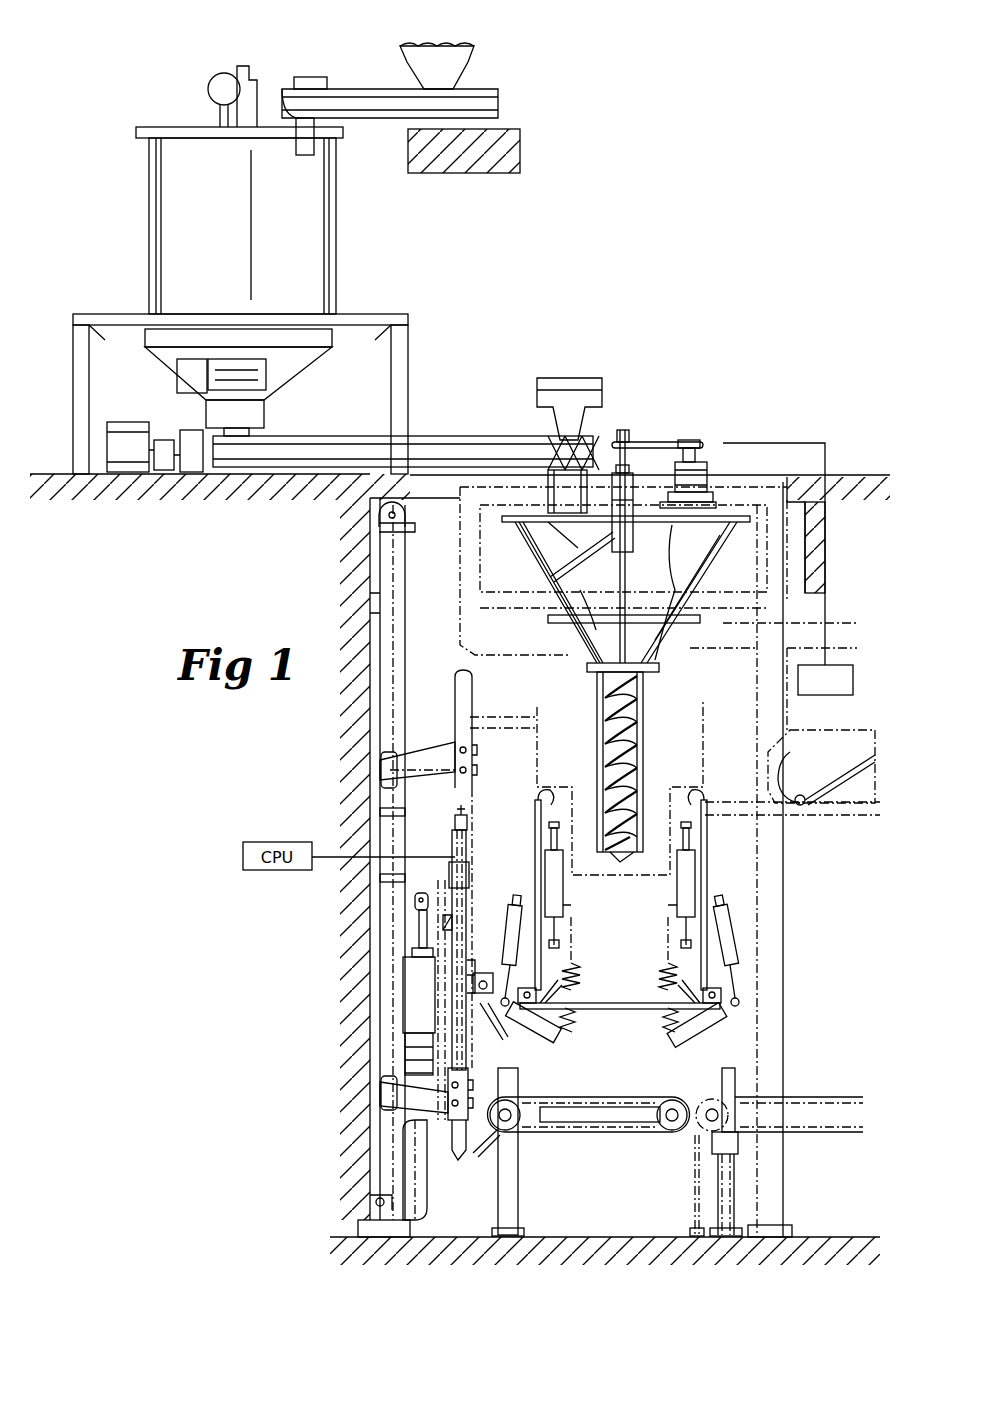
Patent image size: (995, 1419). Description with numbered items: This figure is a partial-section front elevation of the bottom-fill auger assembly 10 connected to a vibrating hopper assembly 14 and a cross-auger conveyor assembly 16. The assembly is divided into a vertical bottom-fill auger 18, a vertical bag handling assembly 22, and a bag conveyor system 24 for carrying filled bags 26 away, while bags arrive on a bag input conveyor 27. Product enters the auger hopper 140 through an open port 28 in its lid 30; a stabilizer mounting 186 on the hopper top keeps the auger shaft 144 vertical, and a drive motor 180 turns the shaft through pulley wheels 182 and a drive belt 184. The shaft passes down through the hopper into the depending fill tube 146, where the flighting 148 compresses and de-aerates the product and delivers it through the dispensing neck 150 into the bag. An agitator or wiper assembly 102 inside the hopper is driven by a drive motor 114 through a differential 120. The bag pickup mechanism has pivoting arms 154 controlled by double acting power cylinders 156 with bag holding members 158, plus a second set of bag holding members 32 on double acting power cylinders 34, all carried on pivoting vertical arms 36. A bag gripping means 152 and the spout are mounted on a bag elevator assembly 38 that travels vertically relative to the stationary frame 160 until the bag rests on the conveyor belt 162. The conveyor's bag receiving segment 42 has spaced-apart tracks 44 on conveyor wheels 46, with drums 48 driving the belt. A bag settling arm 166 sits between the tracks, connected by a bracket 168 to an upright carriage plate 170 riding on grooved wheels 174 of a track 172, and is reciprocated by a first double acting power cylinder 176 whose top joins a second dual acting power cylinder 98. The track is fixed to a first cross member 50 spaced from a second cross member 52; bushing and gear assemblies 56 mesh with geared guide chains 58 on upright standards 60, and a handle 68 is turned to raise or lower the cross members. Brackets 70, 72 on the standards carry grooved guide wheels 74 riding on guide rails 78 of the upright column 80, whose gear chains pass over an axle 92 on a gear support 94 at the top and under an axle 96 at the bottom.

The bottom-fill auger assembly 10 is at (632, 193).
The vibrating hopper assembly 14 is at (149, 167).
The cross-auger conveyor assembly 16 is at (470, 436).
The vertical bottom-fill auger 18 is at (513, 538).
The vertical bag handling assembly 22 is at (697, 1053).
The bag conveyor system 24 is at (803, 1098).
The bag 26 is at (668, 1003).
The bag input conveyor 27 is at (648, 1036).
The open port 28 is at (598, 528).
The lid 30 is at (629, 545).
The second set of bag holding members 32 is at (658, 975).
The second set of double acting power cylinders 34 is at (677, 915).
The pivoting vertical arms 36 is at (538, 794).
The bag elevator assembly 38 is at (486, 892).
The bag receiving segment 42 is at (610, 1143).
The tracks 44 is at (625, 1135).
The conveyor wheels 46 is at (515, 1130).
The drums 48 is at (705, 1128).
The first cross member 50 is at (438, 1025).
The second cross member 52 is at (468, 1010).
The bushing and gear assembly 56 is at (462, 995).
The geared guide chains 58 is at (453, 845).
The upright standards 60 is at (455, 677).
The handle 68 is at (503, 1030).
The bracket 70 is at (388, 1097).
The bracket 72 is at (380, 758).
The grooved guide wheels 74 is at (390, 782).
The guide rails 78 is at (382, 812).
The upright column 80 is at (380, 878).
The axle 92 is at (388, 517).
The gear support 94 is at (383, 522).
The axle 96 is at (375, 1203).
The second dual acting power cylinder 98 is at (403, 978).
The agitator or wiper assembly 102 is at (592, 558).
The drive motor 114 is at (715, 497).
The differential 120 is at (705, 880).
The auger hopper 140 is at (552, 578).
The auger shaft 144 is at (648, 592).
The fill tube 146 is at (590, 687).
The flighting 148 is at (645, 714).
The dispensing neck 150 is at (618, 858).
The bag gripping means 152 is at (705, 724).
The pivoting arms 154 is at (542, 1042).
The double acting power cylinders 156 is at (514, 912).
The bag holding members 158 is at (577, 1024).
The stationary frame 160 is at (377, 634).
The conveyor belt 162 is at (830, 1105).
The bag settling arm 166 is at (580, 1125).
The bracket 168 is at (476, 1152).
The upright carriage plate 170 is at (452, 860).
The track 172 is at (450, 866).
The grooved wheels 174 is at (453, 926).
The first double acting power cylinder 176 is at (400, 1112).
The drive motor 180 is at (708, 472).
The pulley wheels 182 is at (632, 441).
The drive belt 184 is at (695, 446).
The stabilizer mounting 186 is at (633, 482).